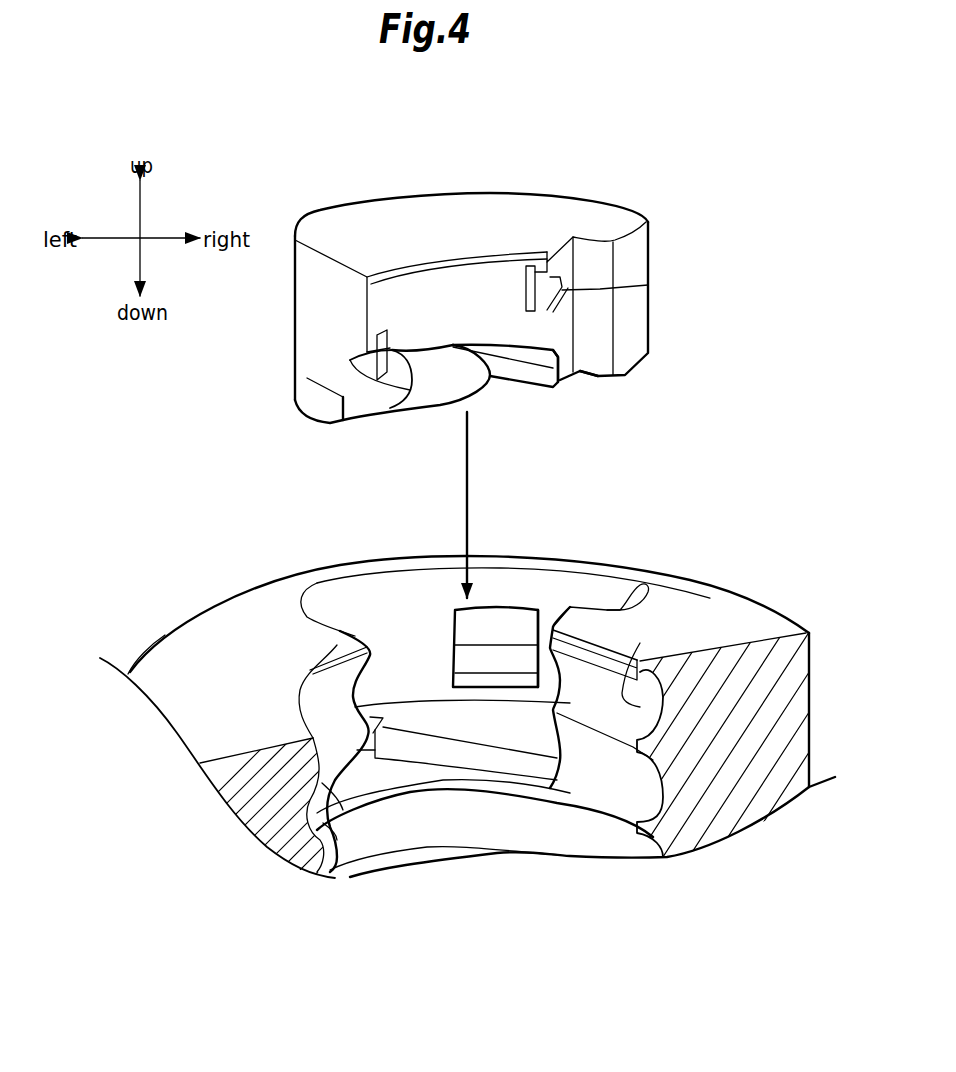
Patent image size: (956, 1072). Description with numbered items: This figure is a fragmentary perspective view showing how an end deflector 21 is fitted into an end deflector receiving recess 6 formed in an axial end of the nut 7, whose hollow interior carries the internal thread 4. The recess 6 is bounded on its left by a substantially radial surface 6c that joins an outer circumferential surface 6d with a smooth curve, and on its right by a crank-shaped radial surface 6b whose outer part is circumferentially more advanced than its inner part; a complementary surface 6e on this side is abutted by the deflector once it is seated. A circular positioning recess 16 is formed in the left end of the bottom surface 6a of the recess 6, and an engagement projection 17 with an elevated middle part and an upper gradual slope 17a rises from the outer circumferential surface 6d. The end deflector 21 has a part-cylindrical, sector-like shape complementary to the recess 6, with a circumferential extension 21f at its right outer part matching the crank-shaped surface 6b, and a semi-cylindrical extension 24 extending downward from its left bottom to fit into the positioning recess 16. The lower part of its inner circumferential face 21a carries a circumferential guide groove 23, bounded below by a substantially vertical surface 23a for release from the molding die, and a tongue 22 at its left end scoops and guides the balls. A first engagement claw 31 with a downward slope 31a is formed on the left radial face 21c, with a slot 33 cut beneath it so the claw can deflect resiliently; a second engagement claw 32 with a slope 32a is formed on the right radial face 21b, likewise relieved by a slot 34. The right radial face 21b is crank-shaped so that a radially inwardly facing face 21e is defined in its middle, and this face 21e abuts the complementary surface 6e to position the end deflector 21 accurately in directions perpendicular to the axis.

The end deflector 21 is at (333, 200).
The inner circumferential face 21a is at (450, 283).
The right radial face 21b is at (637, 278).
The left radial face 21c is at (323, 302).
The radially inwardly facing face 21e is at (597, 352).
The circumferential extension 21f is at (648, 226).
The tongue 22 is at (473, 393).
The circumferential guide groove 23 is at (507, 352).
The substantially vertical surface 23a is at (543, 380).
The semi-cylindrical extension 24 is at (296, 400).
The first engagement claw 31 is at (345, 369).
The slope 31a is at (357, 373).
The second engagement claw 32 is at (580, 280).
The slope 32a is at (627, 290).
The slot 33 is at (390, 348).
The slot 34 is at (532, 268).
The nut 7 is at (197, 607).
The end deflector receiving recess 6 is at (523, 577).
The bottom surface 6a is at (420, 717).
The crank-shaped radial surface 6b is at (630, 593).
The radial surface 6c is at (337, 645).
The outer circumferential surface 6d is at (447, 587).
The complementary surface 6e is at (593, 607).
The circular positioning recess 16 is at (332, 730).
The engagement projection 17 is at (487, 600).
The upper gradual slope 17a is at (527, 627).
The internal thread 4 is at (640, 643).